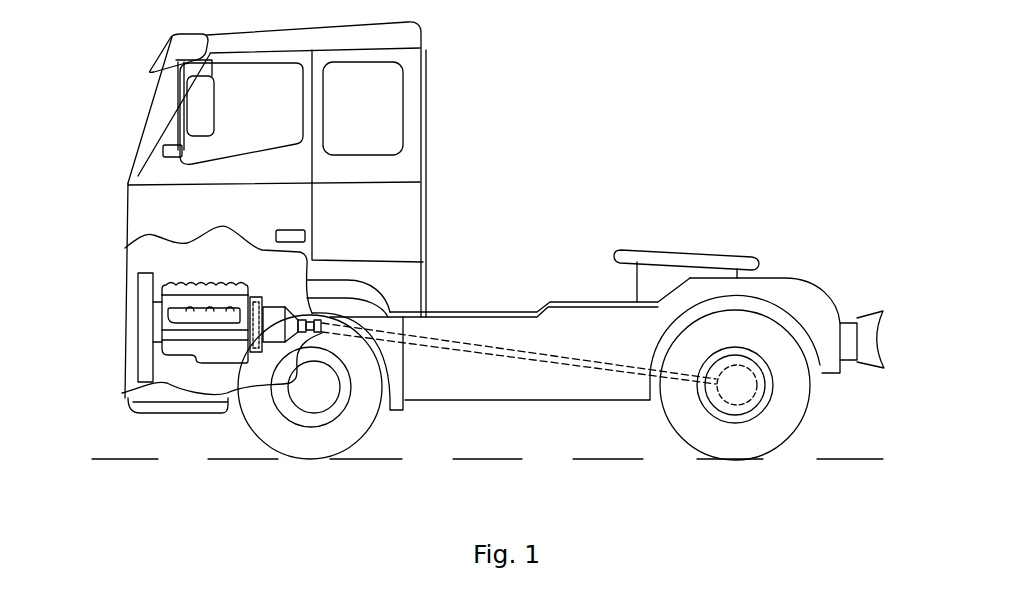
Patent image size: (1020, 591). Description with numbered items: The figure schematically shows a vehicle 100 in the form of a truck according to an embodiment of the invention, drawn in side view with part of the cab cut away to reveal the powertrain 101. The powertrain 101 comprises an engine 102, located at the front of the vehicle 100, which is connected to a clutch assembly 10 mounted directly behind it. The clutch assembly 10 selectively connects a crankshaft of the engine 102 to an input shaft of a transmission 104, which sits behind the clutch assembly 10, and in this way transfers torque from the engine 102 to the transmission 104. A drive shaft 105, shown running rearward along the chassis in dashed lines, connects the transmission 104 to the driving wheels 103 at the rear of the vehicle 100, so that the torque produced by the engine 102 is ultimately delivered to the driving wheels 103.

The vehicle 100 is at (590, 145).
The powertrain 101 is at (245, 280).
The engine 102 is at (208, 322).
The clutch assembly 10 is at (256, 353).
The transmission 104 is at (273, 328).
The drive shaft 105 is at (477, 343).
The driving wheels 103 is at (737, 443).